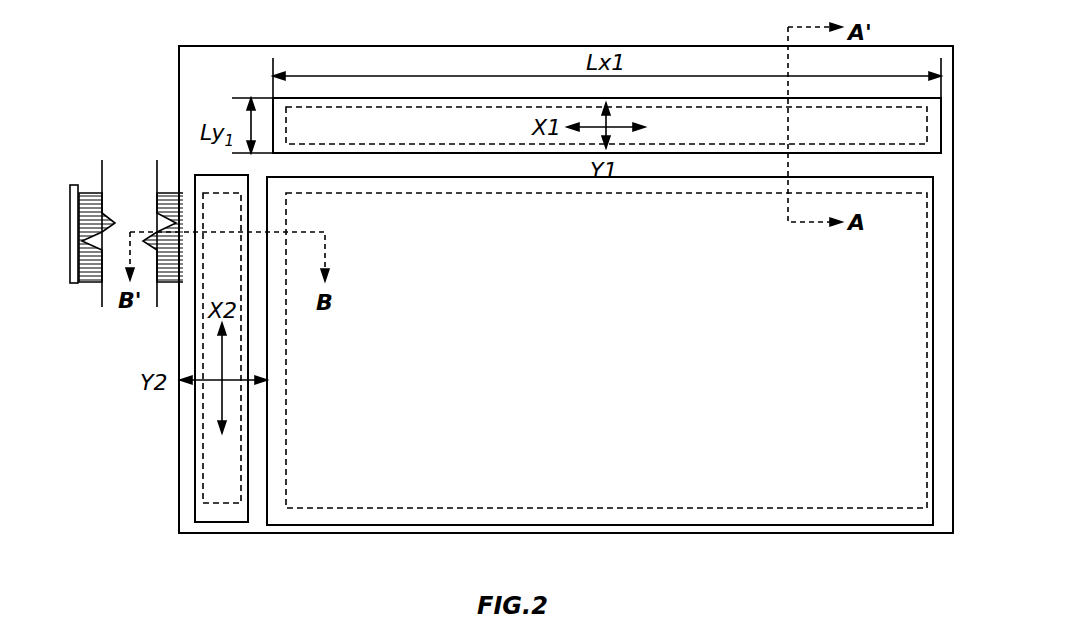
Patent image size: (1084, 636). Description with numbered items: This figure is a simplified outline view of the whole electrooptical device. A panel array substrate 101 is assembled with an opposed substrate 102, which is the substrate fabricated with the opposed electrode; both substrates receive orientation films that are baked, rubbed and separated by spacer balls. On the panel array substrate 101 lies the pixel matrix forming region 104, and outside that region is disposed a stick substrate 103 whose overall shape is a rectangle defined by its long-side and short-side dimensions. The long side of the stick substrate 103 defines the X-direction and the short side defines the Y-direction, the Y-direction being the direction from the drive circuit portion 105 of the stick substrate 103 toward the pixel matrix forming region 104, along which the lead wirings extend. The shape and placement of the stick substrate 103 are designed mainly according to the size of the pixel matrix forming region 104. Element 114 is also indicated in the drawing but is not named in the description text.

The panel array substrate 101 is at (197, 92).
The opposed substrate 102 is at (280, 505).
The stick substrate 103 is at (436, 100).
The pixel matrix forming region 104 is at (626, 361).
The drive circuit portion 105 is at (375, 115).
The connector pins 114 is at (80, 197).